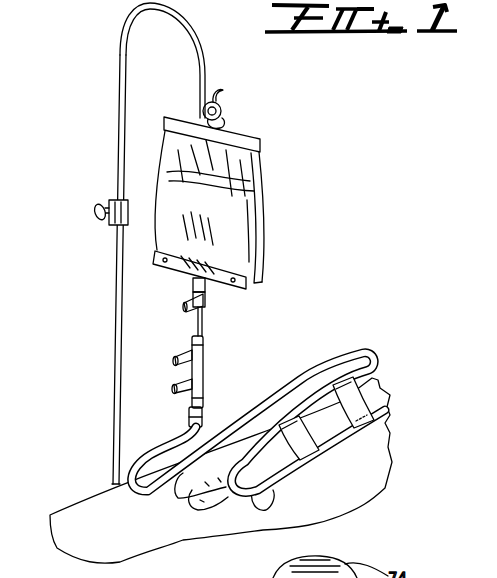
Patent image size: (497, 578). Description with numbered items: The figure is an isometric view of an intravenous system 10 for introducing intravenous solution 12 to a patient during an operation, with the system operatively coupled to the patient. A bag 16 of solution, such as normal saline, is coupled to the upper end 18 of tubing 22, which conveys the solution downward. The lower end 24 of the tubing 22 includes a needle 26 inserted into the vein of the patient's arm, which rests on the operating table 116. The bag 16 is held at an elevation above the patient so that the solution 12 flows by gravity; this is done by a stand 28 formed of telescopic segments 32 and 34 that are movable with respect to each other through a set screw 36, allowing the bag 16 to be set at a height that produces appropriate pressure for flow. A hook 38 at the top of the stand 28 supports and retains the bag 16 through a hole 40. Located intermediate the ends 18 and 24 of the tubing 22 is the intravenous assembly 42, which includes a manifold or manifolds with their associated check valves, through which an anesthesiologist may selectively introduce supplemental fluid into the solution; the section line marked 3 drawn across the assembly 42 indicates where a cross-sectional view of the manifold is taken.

The system 10 is at (255, 321).
The intravenous solution 12 is at (227, 203).
The bag 16 is at (262, 176).
The upper end of tubing 18 is at (205, 289).
The tubing 22 is at (157, 443).
The lower end of tubing 24 is at (325, 456).
The needle 26 is at (340, 432).
The stand 28 is at (129, 243).
The telescopic segment 32 is at (119, 52).
The telescopic segment 34 is at (114, 328).
The set screw 36 is at (110, 203).
The hook 38 is at (222, 97).
The hole 40 is at (222, 124).
The intravenous assembly 42 is at (221, 367).
The section line 3 is at (172, 318).
The operating table 116 is at (393, 473).